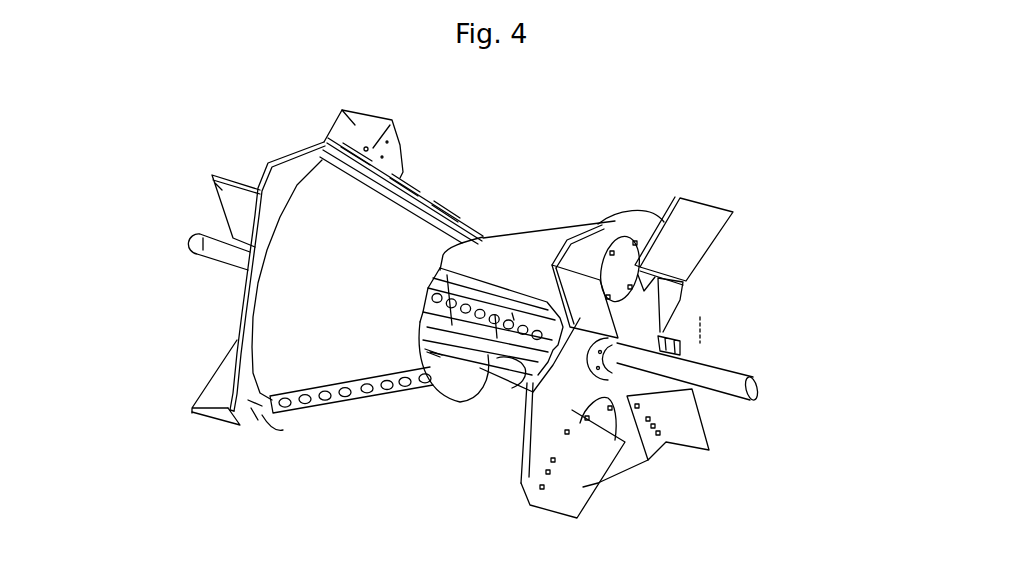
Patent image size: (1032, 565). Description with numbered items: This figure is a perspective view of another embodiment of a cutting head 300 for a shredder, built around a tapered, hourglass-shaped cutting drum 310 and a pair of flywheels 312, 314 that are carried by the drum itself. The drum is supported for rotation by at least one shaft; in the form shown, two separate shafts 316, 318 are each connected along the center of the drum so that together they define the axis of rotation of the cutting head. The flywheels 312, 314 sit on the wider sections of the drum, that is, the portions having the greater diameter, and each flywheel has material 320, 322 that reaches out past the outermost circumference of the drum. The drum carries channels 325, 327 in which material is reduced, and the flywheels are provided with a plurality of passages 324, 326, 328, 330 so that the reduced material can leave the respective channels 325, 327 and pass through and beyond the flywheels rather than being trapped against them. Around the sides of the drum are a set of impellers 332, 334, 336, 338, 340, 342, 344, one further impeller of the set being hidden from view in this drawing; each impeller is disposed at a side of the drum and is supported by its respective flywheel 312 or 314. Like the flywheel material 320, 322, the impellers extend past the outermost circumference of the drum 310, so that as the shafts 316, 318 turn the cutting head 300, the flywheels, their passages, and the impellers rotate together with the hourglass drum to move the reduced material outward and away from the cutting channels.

The cutting head 300 is at (787, 149).
The tapered cutting drum 310 is at (497, 258).
The flywheel 312 is at (632, 228).
The flywheel 314 is at (255, 398).
The shaft 316 is at (712, 373).
The shaft 318 is at (210, 243).
The flywheel material 320 is at (522, 477).
The flywheel material 322 is at (285, 173).
The passage 324 is at (700, 335).
The channel 325 is at (663, 340).
The passage 326 is at (520, 373).
The channel 327 is at (515, 365).
The passage 328 is at (258, 410).
The passage 330 is at (409, 163).
The impeller 332 is at (700, 220).
The impeller 334 is at (693, 437).
The impeller 336 is at (583, 488).
The impeller 338 is at (572, 280).
The impeller 340 is at (210, 180).
The impeller 342 is at (342, 109).
The impeller 344 is at (203, 408).